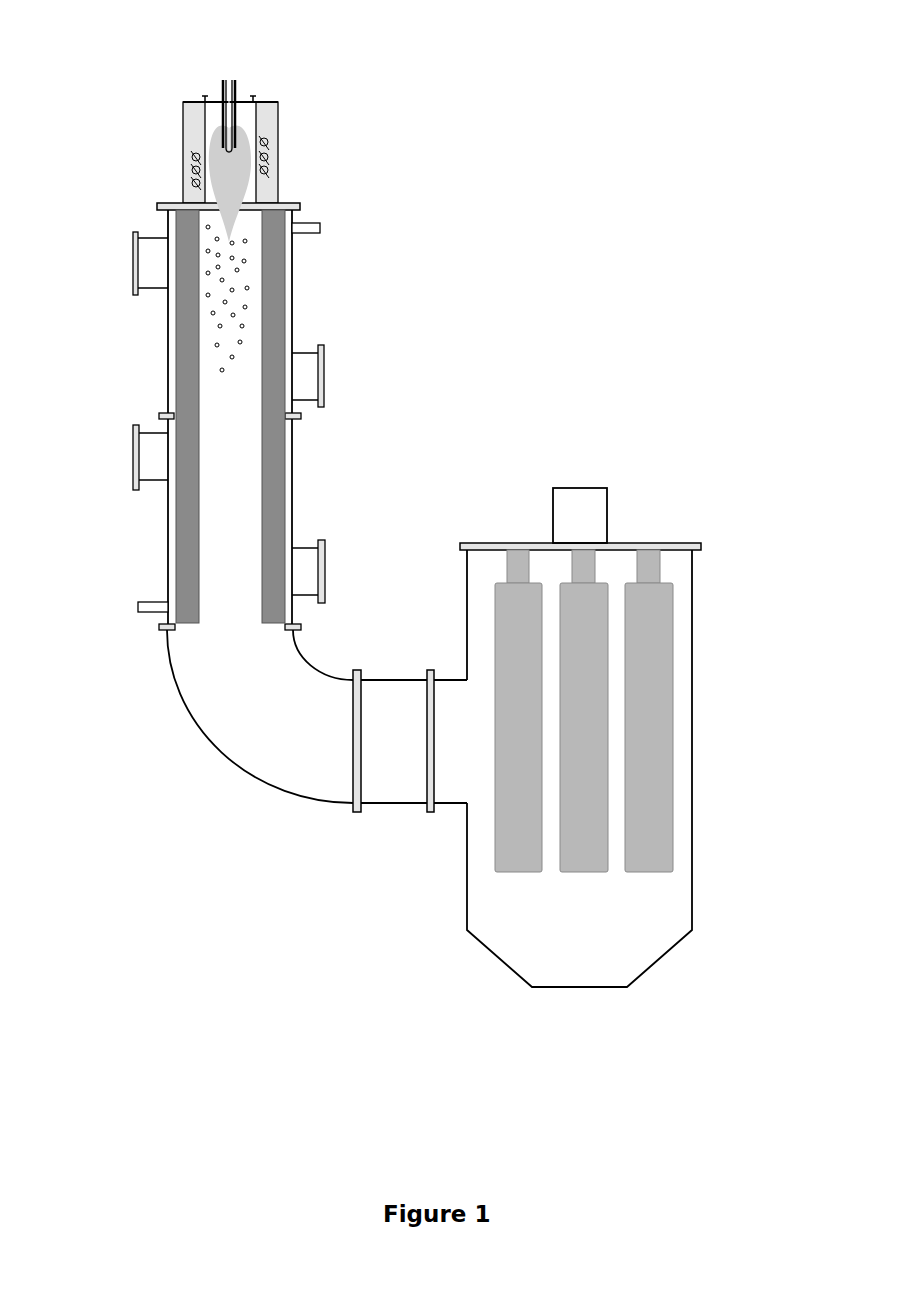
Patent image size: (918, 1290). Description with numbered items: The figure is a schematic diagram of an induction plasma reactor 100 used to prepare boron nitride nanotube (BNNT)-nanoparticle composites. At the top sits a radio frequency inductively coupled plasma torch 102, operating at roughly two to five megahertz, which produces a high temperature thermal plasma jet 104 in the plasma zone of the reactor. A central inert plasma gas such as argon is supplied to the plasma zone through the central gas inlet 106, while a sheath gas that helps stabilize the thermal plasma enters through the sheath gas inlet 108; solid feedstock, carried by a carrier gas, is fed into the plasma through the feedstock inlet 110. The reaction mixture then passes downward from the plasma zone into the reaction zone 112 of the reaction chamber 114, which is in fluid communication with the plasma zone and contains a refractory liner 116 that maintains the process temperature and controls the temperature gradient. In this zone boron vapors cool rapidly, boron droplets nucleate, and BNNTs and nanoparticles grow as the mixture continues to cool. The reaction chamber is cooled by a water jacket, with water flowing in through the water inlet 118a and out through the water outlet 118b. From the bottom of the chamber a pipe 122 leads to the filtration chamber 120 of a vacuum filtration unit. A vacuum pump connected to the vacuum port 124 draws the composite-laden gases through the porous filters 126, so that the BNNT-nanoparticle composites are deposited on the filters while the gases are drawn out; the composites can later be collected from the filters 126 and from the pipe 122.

The induction plasma reactor 100 is at (770, 88).
The inductively coupled plasma torch 102 is at (285, 127).
The thermal plasma jet 104 is at (211, 164).
The central gas inlet 106 is at (238, 90).
The sheath gas inlet 108 is at (212, 90).
The feedstock inlet 110 is at (229, 70).
The reaction zone 112 is at (211, 318).
The reaction chamber 114 is at (161, 357).
The refractory liner 116 is at (266, 383).
The water inlet 118a is at (127, 607).
The water outlet 118b is at (325, 228).
The filtration chamber 120 is at (699, 617).
The pipe 122 is at (396, 786).
The vacuum port 124 is at (579, 488).
The porous filters 126 is at (590, 807).